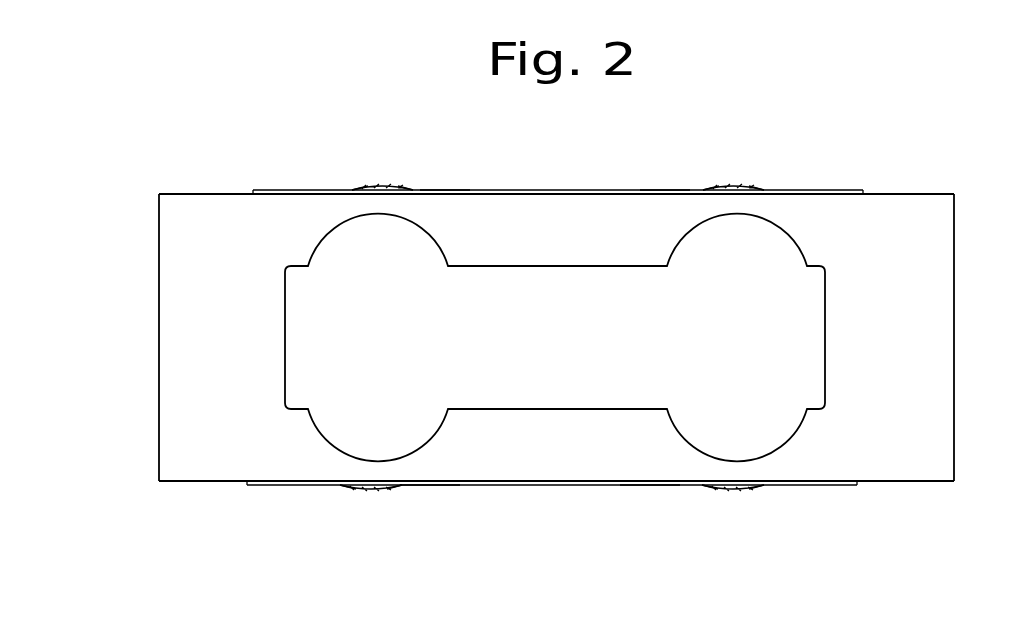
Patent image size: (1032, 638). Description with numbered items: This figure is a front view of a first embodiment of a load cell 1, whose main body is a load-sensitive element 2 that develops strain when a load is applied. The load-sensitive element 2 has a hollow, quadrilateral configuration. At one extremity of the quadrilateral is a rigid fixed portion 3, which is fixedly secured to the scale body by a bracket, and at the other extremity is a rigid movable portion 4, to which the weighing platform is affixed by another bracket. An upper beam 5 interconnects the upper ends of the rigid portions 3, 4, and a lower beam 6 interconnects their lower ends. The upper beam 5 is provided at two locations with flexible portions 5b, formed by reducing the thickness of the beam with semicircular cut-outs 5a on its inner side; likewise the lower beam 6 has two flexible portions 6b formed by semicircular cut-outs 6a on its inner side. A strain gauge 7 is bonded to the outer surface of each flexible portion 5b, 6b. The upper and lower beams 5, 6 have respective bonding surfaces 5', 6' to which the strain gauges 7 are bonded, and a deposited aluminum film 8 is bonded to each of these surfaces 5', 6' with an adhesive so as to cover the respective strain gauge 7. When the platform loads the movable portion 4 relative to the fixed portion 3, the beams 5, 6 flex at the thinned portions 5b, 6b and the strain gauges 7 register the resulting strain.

The load cell 1 is at (978, 234).
The load-sensitive element 2 is at (896, 222).
The fixed portion 3 is at (202, 333).
The movable portion 4 is at (932, 304).
The upper beam 5 is at (558, 177).
The bonding surface 5' is at (558, 170).
The semicircular cut-out 5a is at (375, 226).
The flexible portion 5b is at (390, 204).
The lower beam 6 is at (552, 505).
The bonding surface 6' is at (552, 509).
The semicircular cut-out 6a is at (373, 448).
The flexible portion 6b is at (357, 470).
The strain gauge 7 is at (383, 189).
The deposited aluminum film 8 is at (360, 187).